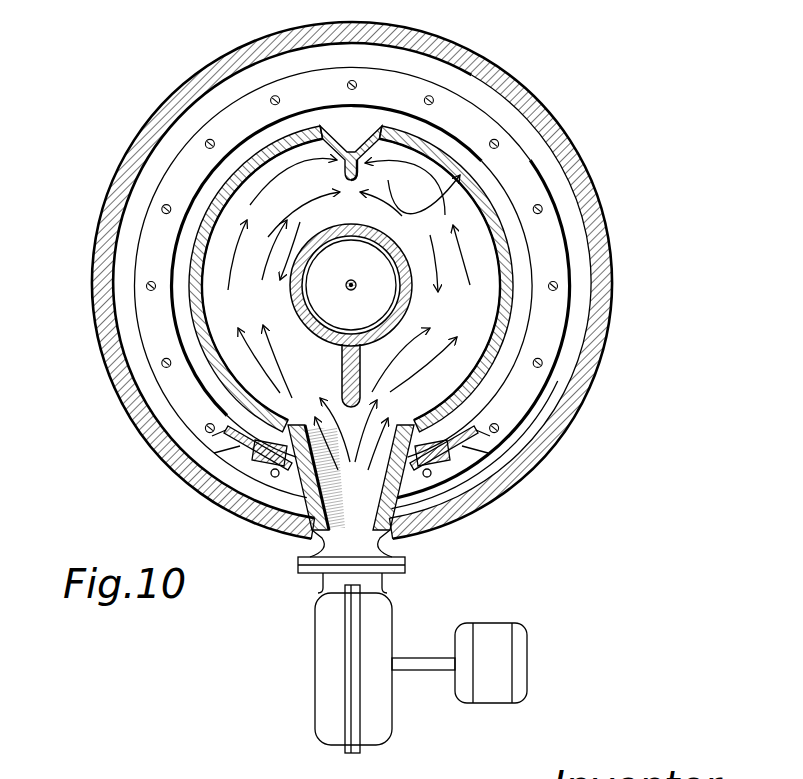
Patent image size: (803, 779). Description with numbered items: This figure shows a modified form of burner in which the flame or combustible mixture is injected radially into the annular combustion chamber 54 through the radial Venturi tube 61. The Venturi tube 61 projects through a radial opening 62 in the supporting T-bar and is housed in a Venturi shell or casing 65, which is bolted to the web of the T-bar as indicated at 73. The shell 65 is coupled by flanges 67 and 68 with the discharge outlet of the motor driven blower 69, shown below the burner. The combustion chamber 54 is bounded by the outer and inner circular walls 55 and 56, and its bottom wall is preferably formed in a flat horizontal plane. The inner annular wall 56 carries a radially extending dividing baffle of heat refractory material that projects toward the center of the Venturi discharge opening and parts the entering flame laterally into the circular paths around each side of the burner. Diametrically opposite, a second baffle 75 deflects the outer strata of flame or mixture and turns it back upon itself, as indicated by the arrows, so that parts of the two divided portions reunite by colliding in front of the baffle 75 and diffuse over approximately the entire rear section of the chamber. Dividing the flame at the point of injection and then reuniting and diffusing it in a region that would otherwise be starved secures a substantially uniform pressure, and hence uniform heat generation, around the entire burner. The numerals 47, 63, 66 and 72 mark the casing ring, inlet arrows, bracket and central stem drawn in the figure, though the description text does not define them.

The casing flange ring 47 is at (144, 326).
The combustion chamber 54 is at (212, 237).
The outer circular wall 55 is at (640, 302).
The inner circular wall 56 is at (412, 268).
The radial Venturi tube 61 is at (386, 419).
The radial opening 62 is at (298, 528).
The inlet passage 63 is at (288, 425).
The Venturi shell 65 is at (433, 544).
The bracket 66 is at (288, 468).
The flange 67 is at (401, 563).
The flange 68 is at (399, 573).
The motor driven blower 69 is at (369, 615).
The partition stem 72 is at (361, 387).
The bolting 73 is at (494, 500).
The second baffle 75 is at (357, 150).